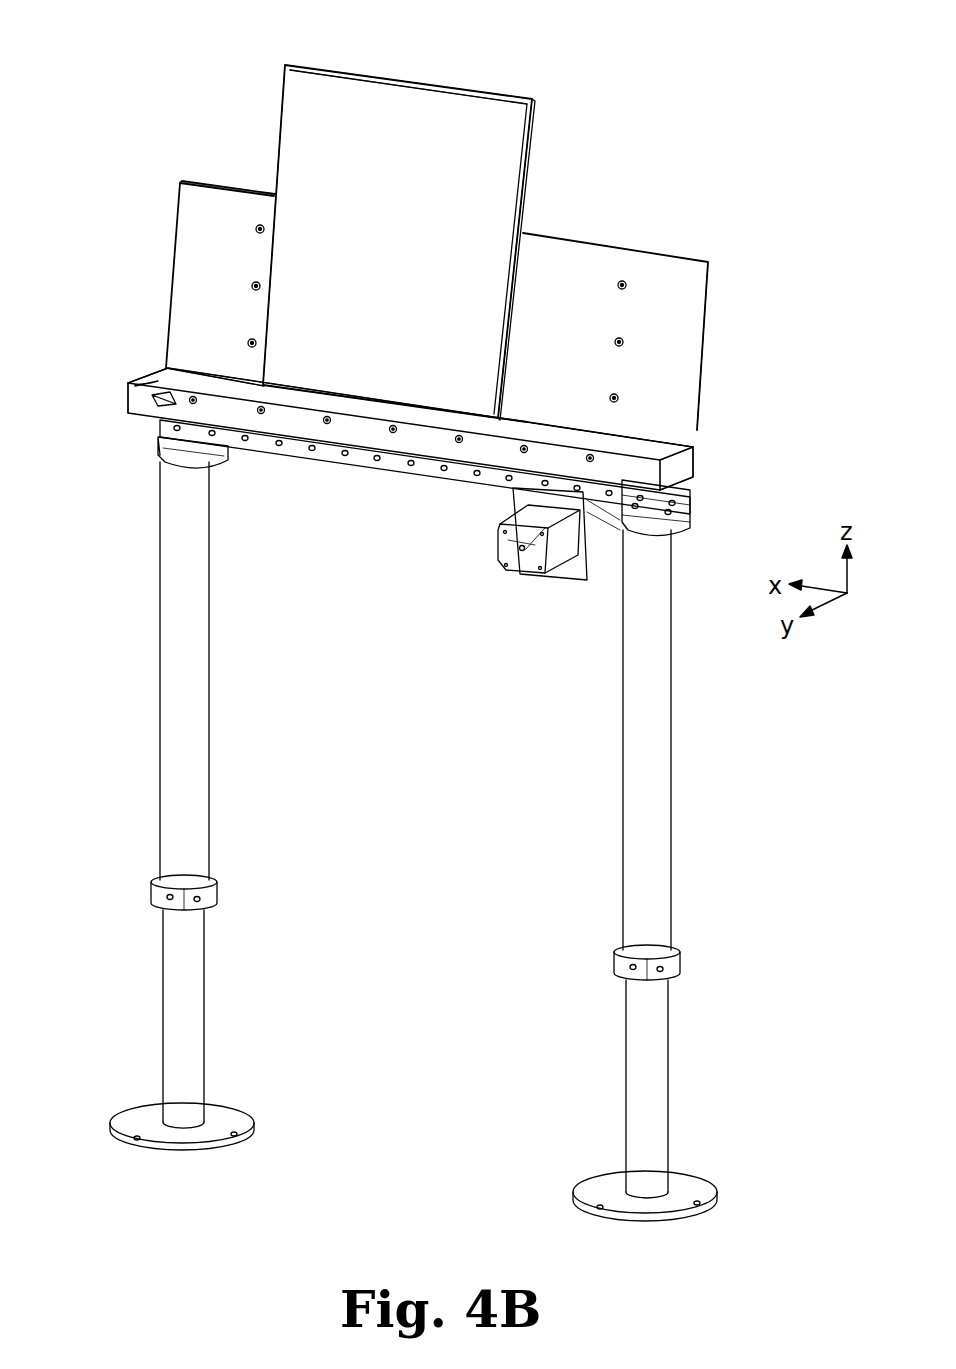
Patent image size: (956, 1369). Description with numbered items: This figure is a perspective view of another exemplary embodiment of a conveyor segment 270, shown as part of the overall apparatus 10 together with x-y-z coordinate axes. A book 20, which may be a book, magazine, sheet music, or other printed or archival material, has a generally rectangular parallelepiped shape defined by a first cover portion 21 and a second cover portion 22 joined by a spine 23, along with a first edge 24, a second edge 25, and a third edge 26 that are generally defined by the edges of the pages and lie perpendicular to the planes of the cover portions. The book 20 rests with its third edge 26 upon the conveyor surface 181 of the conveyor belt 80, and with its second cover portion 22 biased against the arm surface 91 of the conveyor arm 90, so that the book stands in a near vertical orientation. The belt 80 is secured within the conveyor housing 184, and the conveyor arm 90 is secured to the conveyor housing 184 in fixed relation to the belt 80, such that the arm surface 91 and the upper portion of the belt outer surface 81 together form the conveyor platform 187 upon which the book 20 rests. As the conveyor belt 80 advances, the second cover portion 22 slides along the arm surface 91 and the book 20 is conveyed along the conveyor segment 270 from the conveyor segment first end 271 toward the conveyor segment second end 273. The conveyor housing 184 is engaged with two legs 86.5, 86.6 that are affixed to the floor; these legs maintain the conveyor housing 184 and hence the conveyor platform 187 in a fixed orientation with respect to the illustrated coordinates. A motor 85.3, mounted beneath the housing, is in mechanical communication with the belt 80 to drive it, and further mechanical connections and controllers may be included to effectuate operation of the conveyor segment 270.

The display apparatus 10 is at (133, 68).
The conveyor segment 270 is at (694, 158).
The book 20 is at (302, 148).
The first cover portion 21 is at (440, 122).
The second cover portion 22 is at (486, 92).
The spine 23 is at (283, 112).
The first edge 24 is at (340, 70).
The second edge 25 is at (524, 158).
The third edge 26 is at (360, 402).
The conveyor arm 90 is at (700, 270).
The arm surface 91 is at (682, 290).
The conveyor belt 80 is at (700, 455).
The belt outer surface 81 is at (640, 445).
The conveyor segment first end 271 is at (156, 382).
The conveyor segment second end 273 is at (690, 470).
The conveyor platform 187 is at (627, 424).
The conveyor housing 184 is at (362, 440).
The conveyor surface 181 is at (190, 378).
The motor 85.3 is at (522, 573).
The leg 86.6 is at (196, 684).
The leg 86.5 is at (646, 704).